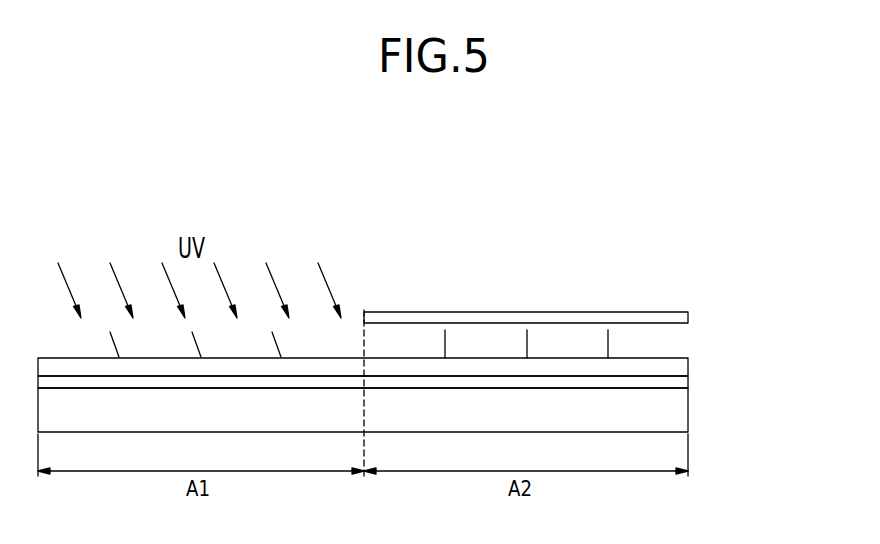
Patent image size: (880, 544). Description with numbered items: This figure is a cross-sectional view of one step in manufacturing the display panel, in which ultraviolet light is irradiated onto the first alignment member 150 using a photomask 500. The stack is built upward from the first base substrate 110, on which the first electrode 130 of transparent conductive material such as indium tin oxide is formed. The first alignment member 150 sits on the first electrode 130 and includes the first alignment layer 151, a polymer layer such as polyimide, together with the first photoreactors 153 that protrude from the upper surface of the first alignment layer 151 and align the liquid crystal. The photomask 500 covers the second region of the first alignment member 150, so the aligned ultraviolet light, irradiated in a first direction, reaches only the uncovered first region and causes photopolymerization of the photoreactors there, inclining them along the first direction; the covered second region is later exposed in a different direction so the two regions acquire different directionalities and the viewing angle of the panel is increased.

The first base substrate 110 is at (682, 407).
The first electrode 130 is at (682, 382).
The first alignment member 150 is at (432, 341).
The first alignment layer 151 is at (682, 367).
The first photoreactor 153 is at (608, 345).
The photomask 500 is at (686, 314).